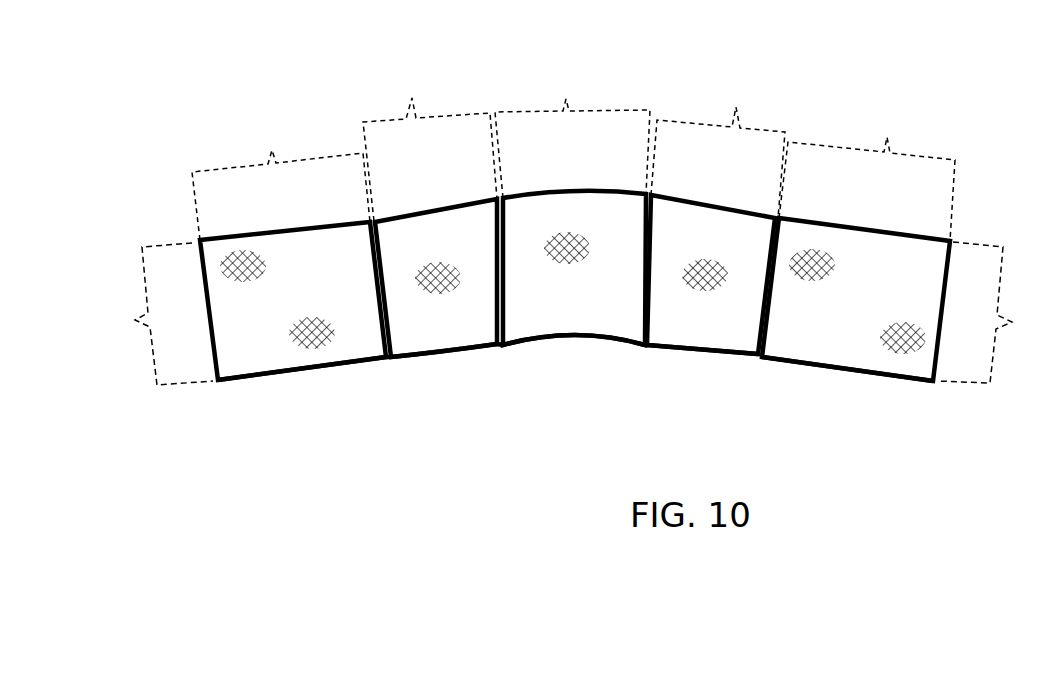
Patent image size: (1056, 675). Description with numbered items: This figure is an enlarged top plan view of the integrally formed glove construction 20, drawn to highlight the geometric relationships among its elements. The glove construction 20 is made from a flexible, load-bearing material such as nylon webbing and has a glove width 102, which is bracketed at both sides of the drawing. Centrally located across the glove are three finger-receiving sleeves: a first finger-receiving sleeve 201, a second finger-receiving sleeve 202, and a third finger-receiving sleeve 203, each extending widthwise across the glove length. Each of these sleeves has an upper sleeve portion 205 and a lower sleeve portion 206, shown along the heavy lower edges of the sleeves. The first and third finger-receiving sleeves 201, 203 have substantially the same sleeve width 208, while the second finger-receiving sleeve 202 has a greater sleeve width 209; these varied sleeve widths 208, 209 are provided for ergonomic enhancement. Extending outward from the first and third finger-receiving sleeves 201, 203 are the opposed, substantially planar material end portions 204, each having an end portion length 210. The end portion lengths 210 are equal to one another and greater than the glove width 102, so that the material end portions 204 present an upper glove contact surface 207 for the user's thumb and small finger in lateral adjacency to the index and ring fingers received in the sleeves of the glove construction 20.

The glove construction 20 is at (167, 106).
The glove width 102 is at (574, 313).
The first finger-receiving sleeve 201 is at (711, 274).
The second finger-receiving sleeve 202 is at (574, 268).
The third finger-receiving sleeve 203 is at (436, 278).
The material end portions 204 is at (575, 299).
The upper sleeve portion 205 is at (434, 345).
The lower sleeve portion 206 is at (447, 354).
The upper glove contact surface 207 is at (271, 358).
The sleeve width 208 is at (574, 150).
The sleeve width 209 is at (572, 137).
The end portion length 210 is at (573, 178).